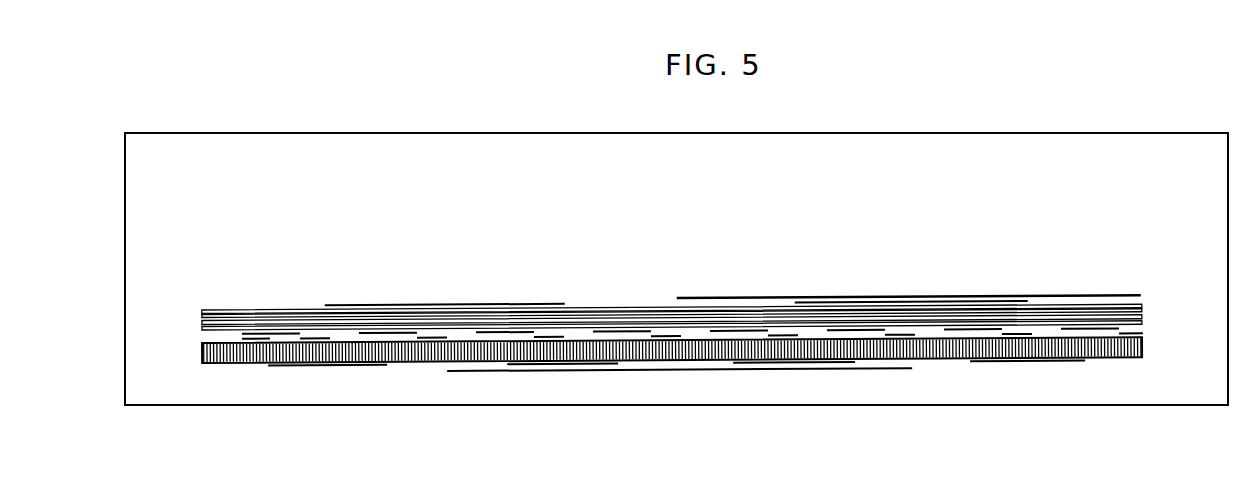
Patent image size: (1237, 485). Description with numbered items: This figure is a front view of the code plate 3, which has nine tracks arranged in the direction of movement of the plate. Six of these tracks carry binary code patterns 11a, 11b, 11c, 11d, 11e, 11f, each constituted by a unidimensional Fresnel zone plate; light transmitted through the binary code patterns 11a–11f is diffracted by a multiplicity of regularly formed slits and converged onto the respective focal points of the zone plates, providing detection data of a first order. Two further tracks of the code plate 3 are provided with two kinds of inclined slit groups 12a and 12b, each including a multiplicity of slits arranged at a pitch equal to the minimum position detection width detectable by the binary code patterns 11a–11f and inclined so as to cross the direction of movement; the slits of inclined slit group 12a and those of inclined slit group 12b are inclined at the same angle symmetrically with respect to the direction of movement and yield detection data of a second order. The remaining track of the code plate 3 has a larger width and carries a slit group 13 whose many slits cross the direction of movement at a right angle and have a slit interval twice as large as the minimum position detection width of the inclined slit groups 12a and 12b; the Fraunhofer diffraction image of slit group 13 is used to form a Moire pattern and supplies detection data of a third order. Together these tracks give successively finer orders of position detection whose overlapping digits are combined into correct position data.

The code plate 3 is at (236, 148).
The binary code pattern 11a is at (1086, 296).
The binary code pattern 11b is at (1005, 299).
The binary code pattern 11c is at (1136, 329).
The binary code pattern 11d is at (1147, 335).
The binary code pattern 11e is at (1069, 373).
The binary code pattern 11f is at (905, 373).
The inclined slit group 12a is at (1140, 304).
The inclined slit group 12b is at (1143, 318).
The slit group 13 is at (1143, 351).